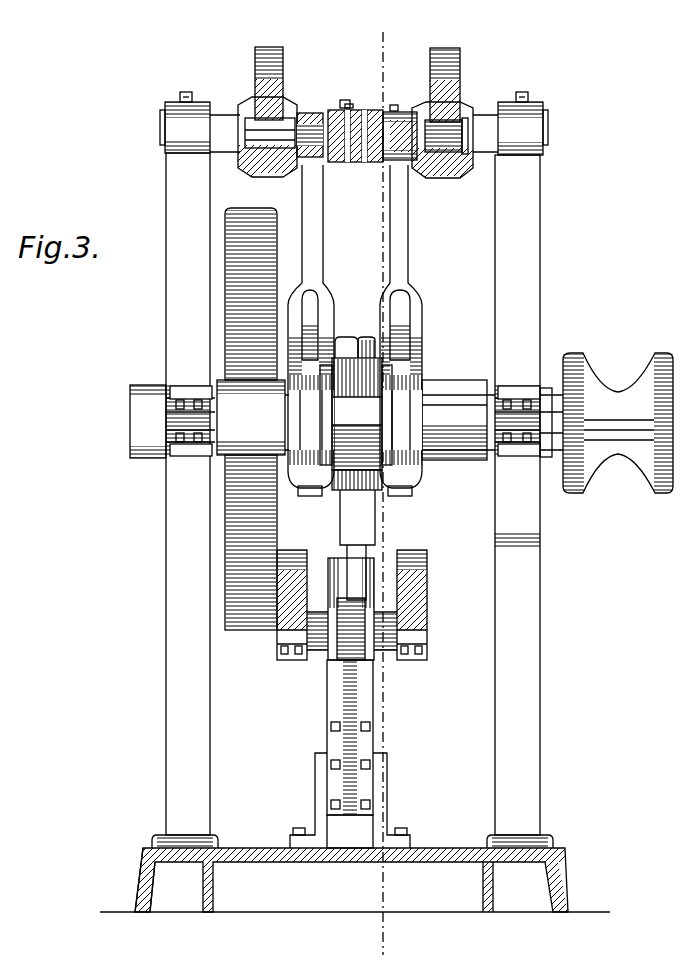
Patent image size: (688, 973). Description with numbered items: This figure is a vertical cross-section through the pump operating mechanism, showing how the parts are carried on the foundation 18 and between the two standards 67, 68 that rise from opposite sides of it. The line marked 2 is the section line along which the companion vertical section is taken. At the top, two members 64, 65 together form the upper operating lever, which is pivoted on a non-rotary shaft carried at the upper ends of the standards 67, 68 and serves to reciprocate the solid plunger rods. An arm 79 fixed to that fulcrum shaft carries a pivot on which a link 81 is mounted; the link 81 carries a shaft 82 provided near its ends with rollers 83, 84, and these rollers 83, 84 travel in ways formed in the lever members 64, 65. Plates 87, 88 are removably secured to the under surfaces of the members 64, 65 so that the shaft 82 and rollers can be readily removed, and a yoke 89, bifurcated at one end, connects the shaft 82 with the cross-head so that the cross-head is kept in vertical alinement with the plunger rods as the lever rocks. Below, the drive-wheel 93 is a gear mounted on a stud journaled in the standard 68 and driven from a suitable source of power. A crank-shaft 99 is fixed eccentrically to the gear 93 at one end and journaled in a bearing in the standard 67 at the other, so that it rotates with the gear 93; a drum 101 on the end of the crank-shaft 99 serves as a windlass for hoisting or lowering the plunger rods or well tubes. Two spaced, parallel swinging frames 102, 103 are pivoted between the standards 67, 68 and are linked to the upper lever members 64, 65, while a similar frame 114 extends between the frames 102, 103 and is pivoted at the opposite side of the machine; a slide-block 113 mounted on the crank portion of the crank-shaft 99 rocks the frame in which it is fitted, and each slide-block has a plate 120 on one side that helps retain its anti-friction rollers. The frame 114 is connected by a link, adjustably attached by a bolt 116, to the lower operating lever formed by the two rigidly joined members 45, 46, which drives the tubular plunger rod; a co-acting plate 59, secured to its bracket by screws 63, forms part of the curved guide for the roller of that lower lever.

The section line 2 is at (394, 31).
The foundation 18 is at (553, 883).
The lower operating lever member 45 is at (420, 615).
The lower operating lever member 46 is at (285, 622).
The co-acting plate 59 is at (375, 670).
The screws 63 is at (370, 728).
The upper operating lever member 64 is at (455, 90).
The upper operating lever member 65 is at (262, 92).
The standard 67 is at (530, 360).
The standard 68 is at (186, 662).
The arm 79 is at (335, 115).
The link 81 is at (365, 164).
The shaft 82 is at (420, 120).
The roller 83 is at (450, 120).
The roller 84 is at (278, 116).
The plate 87 is at (445, 178).
The plate 88 is at (268, 172).
The yoke 89 is at (344, 100).
The drive-wheel 93 is at (240, 590).
The crank-shaft 99 is at (455, 392).
The drum 101 is at (630, 398).
The swinging frame 102 is at (408, 265).
The swinging frame 103 is at (316, 256).
The slide-block 113 is at (330, 395).
The frame 114 is at (352, 375).
The bolt 116 is at (342, 345).
The plate 120 is at (420, 370).